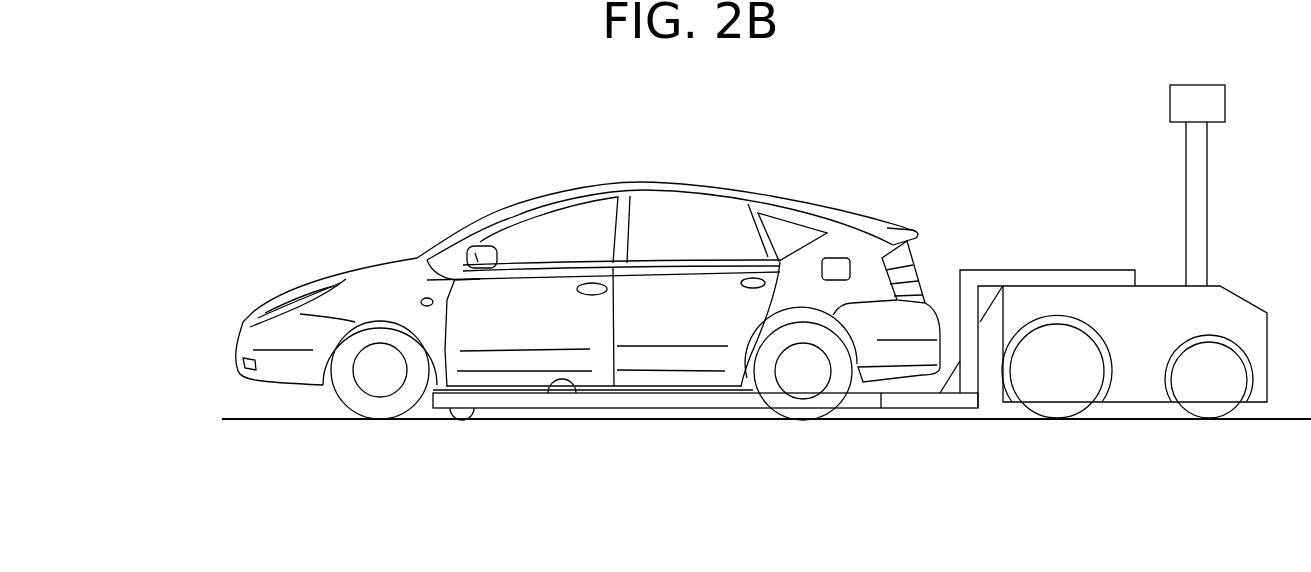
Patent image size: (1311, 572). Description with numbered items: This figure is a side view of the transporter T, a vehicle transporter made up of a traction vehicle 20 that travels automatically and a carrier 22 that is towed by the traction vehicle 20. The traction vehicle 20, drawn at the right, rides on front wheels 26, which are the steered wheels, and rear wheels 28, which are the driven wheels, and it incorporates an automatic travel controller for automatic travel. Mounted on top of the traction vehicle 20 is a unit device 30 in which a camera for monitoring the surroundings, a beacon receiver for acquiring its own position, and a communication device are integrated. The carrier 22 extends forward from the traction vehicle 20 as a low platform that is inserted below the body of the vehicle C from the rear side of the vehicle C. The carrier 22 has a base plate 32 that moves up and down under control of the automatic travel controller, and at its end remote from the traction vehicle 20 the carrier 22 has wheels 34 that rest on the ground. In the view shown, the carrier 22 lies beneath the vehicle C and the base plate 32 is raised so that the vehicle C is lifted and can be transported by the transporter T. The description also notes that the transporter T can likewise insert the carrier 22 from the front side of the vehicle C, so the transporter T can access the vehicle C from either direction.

The vehicle C is at (562, 193).
The transporter T is at (1034, 110).
The traction vehicle 20 is at (1138, 418).
The carrier 22 is at (918, 411).
The front wheels 26 is at (1222, 402).
The rear wheels 28 is at (1055, 404).
The unit device 30 is at (1213, 90).
The base plate 32 is at (549, 396).
The wheels 34 is at (462, 418).